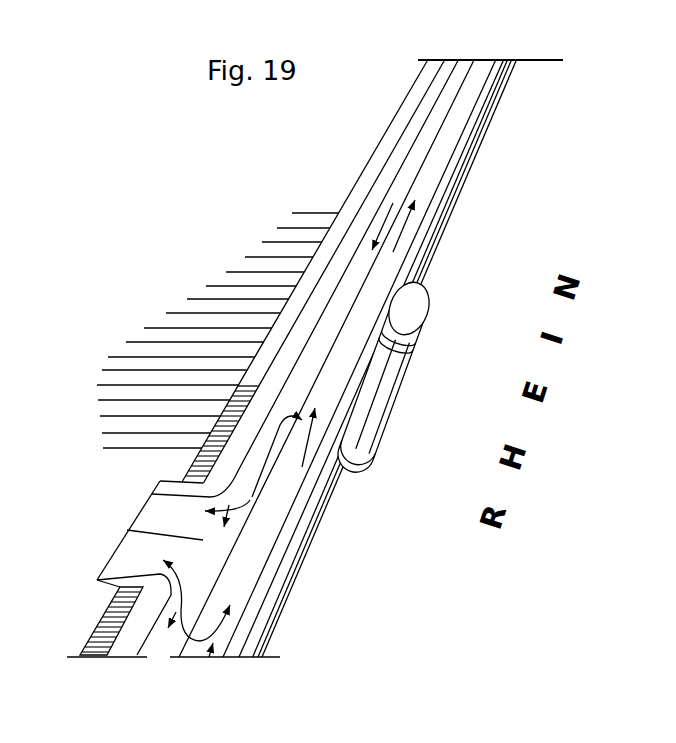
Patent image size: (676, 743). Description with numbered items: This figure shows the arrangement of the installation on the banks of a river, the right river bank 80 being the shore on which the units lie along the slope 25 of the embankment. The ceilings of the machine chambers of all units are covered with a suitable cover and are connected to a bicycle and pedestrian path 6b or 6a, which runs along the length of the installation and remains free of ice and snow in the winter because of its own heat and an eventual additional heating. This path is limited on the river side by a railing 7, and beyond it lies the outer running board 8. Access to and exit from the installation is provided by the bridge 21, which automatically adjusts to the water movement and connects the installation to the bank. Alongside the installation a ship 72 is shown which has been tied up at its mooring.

The right river bank 80 is at (216, 197).
The slope 25 is at (365, 183).
The bicycle and pedestrian path 6a is at (403, 153).
The bicycle and pedestrian path 6b is at (432, 127).
The railing 7 is at (448, 203).
The outer running board 8 is at (325, 496).
The ship 72 is at (365, 435).
The bridge 21 is at (150, 515).